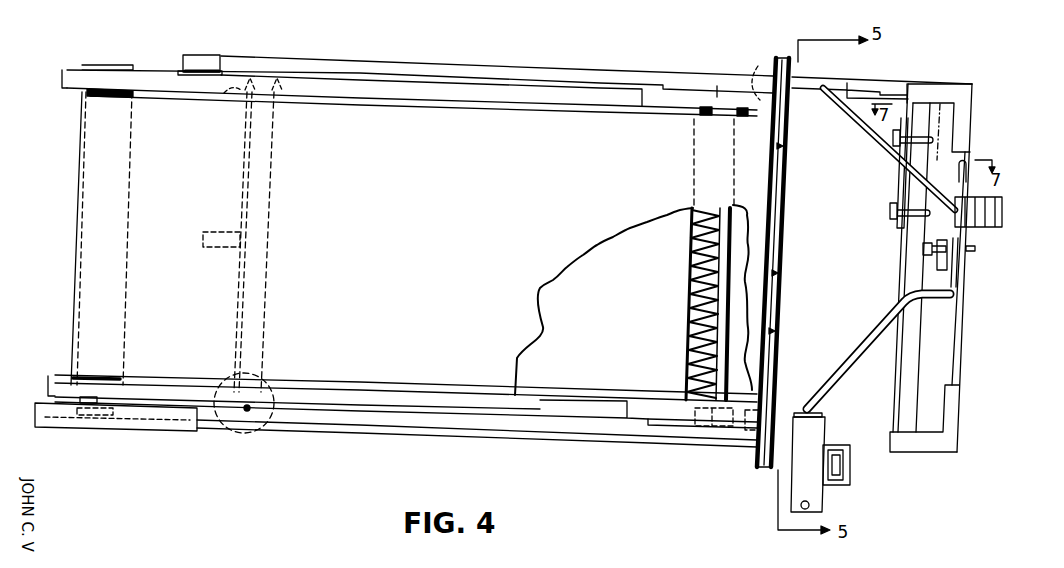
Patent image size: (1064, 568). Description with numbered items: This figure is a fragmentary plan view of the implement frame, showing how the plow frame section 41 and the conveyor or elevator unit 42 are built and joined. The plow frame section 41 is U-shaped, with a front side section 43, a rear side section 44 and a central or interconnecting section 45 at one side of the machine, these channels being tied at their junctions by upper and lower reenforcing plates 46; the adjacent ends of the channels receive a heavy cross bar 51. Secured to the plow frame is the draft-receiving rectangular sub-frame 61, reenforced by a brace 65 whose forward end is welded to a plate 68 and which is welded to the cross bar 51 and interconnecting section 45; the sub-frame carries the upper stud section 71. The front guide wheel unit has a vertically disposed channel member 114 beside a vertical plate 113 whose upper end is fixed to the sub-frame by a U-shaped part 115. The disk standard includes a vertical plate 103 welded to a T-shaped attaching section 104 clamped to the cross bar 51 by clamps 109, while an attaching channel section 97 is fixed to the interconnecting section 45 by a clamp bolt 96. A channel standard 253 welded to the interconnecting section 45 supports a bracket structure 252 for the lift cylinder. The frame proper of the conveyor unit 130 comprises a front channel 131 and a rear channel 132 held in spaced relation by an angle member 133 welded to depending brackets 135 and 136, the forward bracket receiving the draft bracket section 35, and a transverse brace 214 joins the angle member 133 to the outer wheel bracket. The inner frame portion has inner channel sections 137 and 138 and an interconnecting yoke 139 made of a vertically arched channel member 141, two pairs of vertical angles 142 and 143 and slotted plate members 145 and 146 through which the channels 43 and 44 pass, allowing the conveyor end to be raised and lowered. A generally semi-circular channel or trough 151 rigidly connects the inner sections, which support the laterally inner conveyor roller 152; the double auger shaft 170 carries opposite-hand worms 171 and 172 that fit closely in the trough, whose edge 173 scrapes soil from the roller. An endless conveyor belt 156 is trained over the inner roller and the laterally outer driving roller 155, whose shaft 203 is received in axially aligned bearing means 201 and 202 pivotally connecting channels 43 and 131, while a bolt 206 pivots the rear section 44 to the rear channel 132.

The frame proper of the conveyor or elevator unit 130 is at (517, 63).
The bolt 206 is at (198, 56).
The rear side section 44 is at (378, 62).
The inner channel section 137 is at (718, 95).
The pair of vertical laterally spaced apart angles 142 is at (770, 66).
The plate member 145 is at (792, 69).
The reenforcing plates 46 is at (966, 114).
The depending bracket 135 is at (227, 96).
The rear channel 132 is at (431, 102).
The endless elevator or conveyor belt 156 is at (98, 170).
The laterally outer elevator and conveyor roller 155 is at (78, 242).
The transverse brace 214 is at (221, 232).
The angle member 133 is at (270, 238).
The clamps 109 is at (893, 140).
The vertical plate 103 is at (897, 186).
The T-shaped attaching section 104 is at (896, 226).
The channel standard 253 is at (972, 189).
The bracket structure 252 is at (1003, 220).
The clamp bolt 96 is at (922, 251).
The attaching channel section 97 is at (948, 262).
The cross bar 51 is at (906, 289).
The central or interconnecting section 45 is at (936, 268).
The brace 65 is at (858, 356).
The plate 68 is at (824, 411).
The vertical plate 113 is at (841, 452).
The vertically disposed channel member 114 is at (852, 462).
The U-shaped part 115 is at (851, 480).
The upper stud section 71 is at (810, 506).
The draft-receiving rectangular sub-frame 61 is at (832, 448).
The plate member 146 is at (763, 428).
The pair of vertical laterally spaced apart angles 143 is at (757, 455).
The inner channel section 138 is at (668, 424).
The interconnecting yoke 139 is at (796, 285).
The vertically arched channel member 141 is at (777, 286).
The edge of the channel 173 is at (745, 318).
The laterally inner conveyor or elevator roller 152 is at (752, 368).
The worm 172 is at (693, 227).
The generally semi-circular channel or trough 151 is at (691, 271).
The double auger shaft 170 is at (684, 257).
The worm 171 is at (690, 361).
The conveyor or elevator unit 42 is at (378, 407).
The shaft 203 is at (97, 394).
The bearing means 201 is at (110, 396).
The depending bracket 136 is at (220, 386).
The bearing means 202 is at (120, 423).
The draft bracket section 35 is at (228, 424).
The front side section 43 is at (365, 426).
The front channel 131 is at (410, 393).
The plow frame section 41 is at (516, 440).